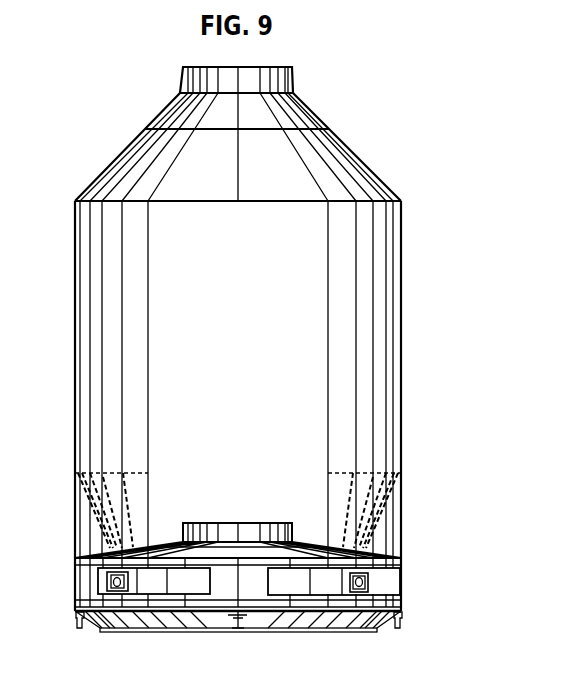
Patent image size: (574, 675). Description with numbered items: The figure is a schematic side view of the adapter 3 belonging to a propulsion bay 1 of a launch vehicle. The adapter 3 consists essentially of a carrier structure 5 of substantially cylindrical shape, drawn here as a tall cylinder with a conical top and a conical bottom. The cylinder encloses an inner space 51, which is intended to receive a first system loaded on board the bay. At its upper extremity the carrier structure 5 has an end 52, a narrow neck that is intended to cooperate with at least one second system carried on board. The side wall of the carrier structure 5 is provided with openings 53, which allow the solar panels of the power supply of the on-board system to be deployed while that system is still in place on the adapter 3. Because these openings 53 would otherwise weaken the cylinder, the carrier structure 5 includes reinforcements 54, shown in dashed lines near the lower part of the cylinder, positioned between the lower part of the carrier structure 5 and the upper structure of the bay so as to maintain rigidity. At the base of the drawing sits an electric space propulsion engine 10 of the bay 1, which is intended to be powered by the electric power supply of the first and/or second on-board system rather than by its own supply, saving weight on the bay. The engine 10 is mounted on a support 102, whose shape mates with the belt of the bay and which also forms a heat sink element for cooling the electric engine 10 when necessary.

The propulsion bay 1 is at (420, 600).
The adapter 3 is at (182, 532).
The carrier structure 5 is at (97, 364).
The electric space propulsion engine 10 is at (370, 578).
The inner space 51 is at (248, 392).
The end 52 is at (188, 113).
The openings 53 is at (310, 352).
The reinforcements 54 is at (93, 524).
The support 102 is at (303, 582).